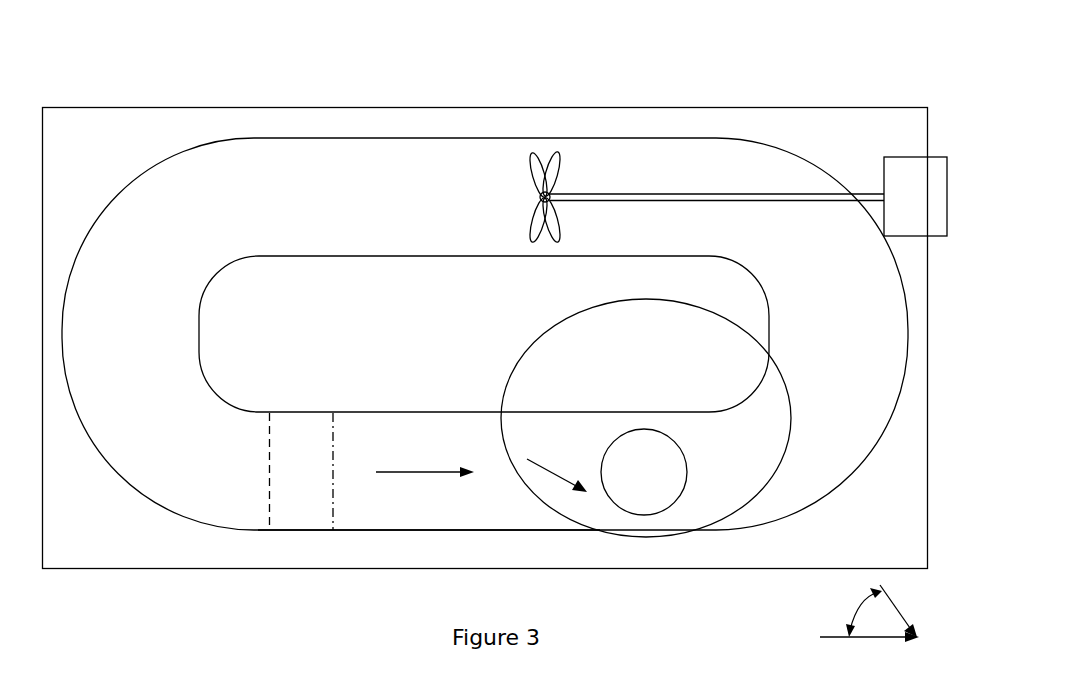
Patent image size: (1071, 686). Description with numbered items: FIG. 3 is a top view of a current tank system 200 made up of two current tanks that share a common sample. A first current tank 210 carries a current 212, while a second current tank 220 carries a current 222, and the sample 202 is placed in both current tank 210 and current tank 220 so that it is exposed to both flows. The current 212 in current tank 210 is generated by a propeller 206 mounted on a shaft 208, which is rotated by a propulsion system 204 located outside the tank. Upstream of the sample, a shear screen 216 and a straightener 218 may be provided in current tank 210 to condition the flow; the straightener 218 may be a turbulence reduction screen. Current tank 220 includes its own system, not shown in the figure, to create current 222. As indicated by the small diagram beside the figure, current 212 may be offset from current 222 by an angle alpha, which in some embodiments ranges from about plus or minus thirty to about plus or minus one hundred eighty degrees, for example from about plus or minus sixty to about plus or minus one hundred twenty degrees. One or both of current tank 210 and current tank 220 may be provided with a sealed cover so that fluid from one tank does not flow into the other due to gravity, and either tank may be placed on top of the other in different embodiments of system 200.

The system 200 is at (735, 93).
The sample 202 is at (646, 418).
The propulsion system 204 is at (897, 157).
The propeller 206 is at (530, 170).
The shaft 208 is at (662, 193).
The current tank 210 is at (485, 334).
The current 212 is at (647, 560).
The shear screen 216 is at (268, 470).
The straightener 218 is at (333, 463).
The current tank 220 is at (429, 536).
The current 222 is at (726, 547).